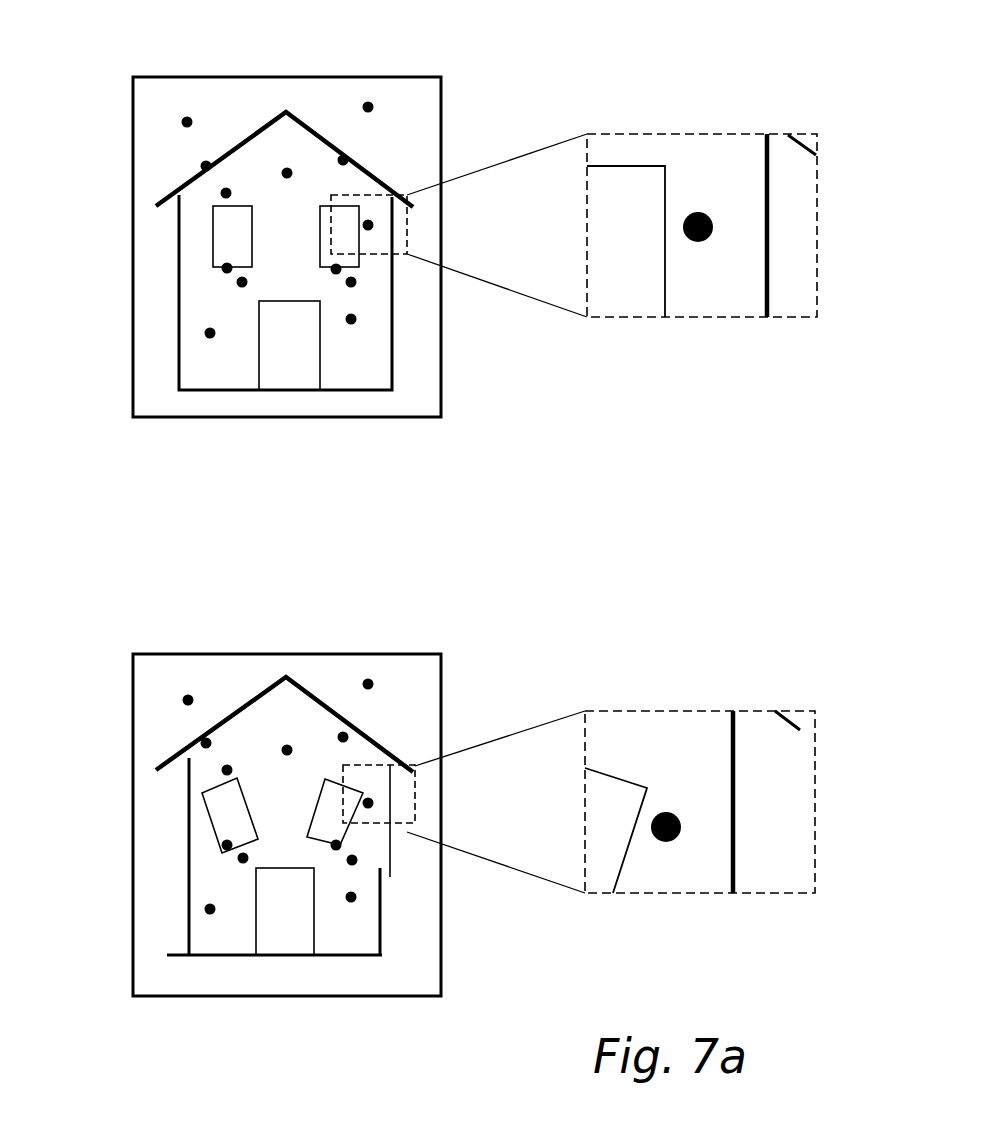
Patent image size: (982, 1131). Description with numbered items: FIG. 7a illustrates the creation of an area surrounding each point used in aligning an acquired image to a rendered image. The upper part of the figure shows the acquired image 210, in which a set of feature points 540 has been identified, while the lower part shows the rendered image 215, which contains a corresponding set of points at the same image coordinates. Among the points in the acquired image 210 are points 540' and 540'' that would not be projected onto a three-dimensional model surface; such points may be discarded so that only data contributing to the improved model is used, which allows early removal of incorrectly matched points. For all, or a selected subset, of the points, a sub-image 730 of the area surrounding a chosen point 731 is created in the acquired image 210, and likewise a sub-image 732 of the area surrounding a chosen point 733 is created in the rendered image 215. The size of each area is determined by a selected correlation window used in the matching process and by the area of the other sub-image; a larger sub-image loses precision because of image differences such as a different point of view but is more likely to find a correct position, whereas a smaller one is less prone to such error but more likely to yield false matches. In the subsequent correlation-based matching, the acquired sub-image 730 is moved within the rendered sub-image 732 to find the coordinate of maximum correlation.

The acquired image 210 is at (132, 142).
The rendered image 215 is at (215, 667).
The feature points 540 is at (136, 348).
The feature point 540' is at (411, 58).
The feature point 540'' is at (221, 65).
The sub-image 730 is at (707, 134).
The chosen point 731 is at (713, 224).
The sub-image 732 is at (738, 711).
The chosen point 733 is at (673, 811).